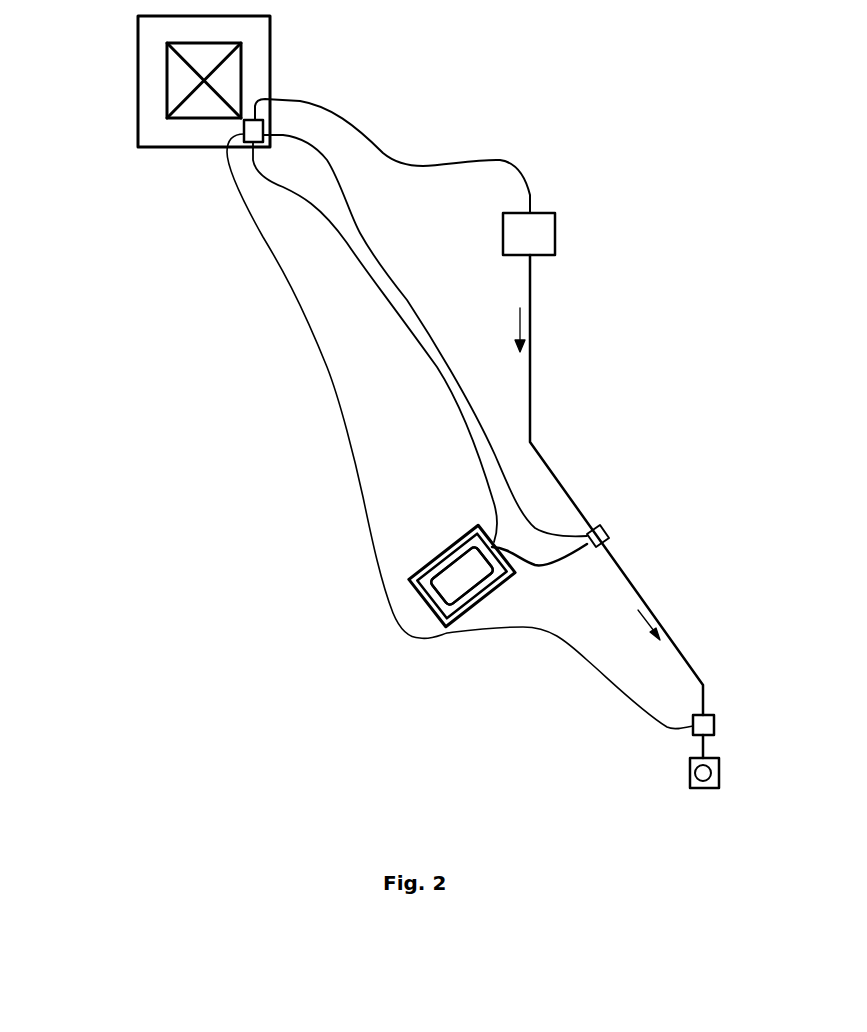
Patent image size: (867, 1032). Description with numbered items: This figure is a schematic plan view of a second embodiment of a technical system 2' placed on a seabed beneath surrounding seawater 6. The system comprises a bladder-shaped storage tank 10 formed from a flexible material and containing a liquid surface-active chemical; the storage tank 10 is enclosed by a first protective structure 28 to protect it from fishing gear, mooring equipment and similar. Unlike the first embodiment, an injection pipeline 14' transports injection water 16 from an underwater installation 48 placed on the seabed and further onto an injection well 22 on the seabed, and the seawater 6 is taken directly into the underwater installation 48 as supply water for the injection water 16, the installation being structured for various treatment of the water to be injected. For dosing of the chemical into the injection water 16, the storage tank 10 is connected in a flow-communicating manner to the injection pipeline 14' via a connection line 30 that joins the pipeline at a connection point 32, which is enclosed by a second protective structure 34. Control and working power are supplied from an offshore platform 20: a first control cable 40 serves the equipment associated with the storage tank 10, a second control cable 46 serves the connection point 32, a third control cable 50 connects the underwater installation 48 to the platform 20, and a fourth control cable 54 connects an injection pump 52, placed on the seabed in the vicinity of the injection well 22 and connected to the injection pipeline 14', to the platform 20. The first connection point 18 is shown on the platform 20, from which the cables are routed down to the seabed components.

The technical system 2' is at (300, 596).
The seawater 6 is at (713, 326).
The storage tank 10 is at (465, 575).
The injection pipeline 14' is at (653, 485).
The injection water 16 is at (518, 323).
The first connection point 18 is at (248, 120).
The offshore platform 20 is at (150, 32).
The injection well 22 is at (719, 773).
The first protective structure 28 is at (462, 533).
The connection line 30 is at (580, 556).
The connection point 32 is at (636, 511).
The second protective structure 34 is at (610, 536).
The first control cable 40 is at (287, 192).
The second control cable 46 is at (327, 158).
The underwater installation 48 is at (535, 234).
The third control cable 50 is at (322, 106).
The injection pump 52 is at (714, 725).
The fourth control cable 54 is at (227, 178).